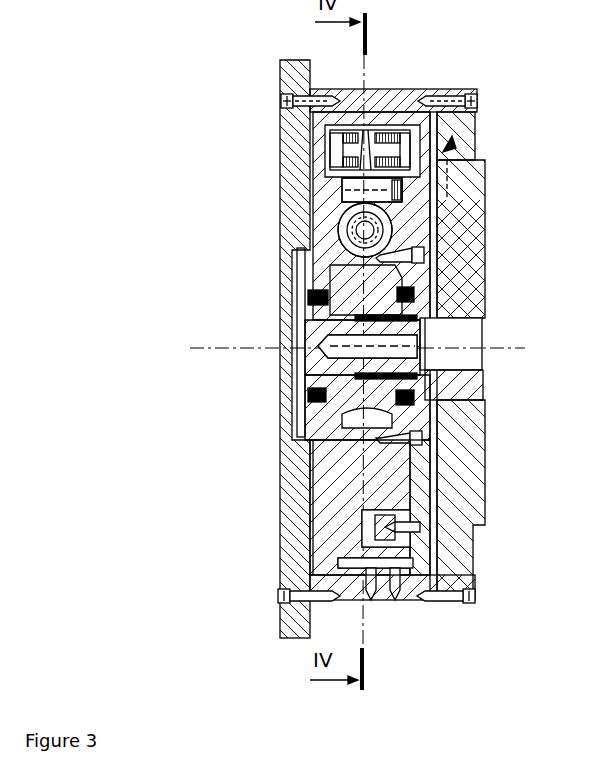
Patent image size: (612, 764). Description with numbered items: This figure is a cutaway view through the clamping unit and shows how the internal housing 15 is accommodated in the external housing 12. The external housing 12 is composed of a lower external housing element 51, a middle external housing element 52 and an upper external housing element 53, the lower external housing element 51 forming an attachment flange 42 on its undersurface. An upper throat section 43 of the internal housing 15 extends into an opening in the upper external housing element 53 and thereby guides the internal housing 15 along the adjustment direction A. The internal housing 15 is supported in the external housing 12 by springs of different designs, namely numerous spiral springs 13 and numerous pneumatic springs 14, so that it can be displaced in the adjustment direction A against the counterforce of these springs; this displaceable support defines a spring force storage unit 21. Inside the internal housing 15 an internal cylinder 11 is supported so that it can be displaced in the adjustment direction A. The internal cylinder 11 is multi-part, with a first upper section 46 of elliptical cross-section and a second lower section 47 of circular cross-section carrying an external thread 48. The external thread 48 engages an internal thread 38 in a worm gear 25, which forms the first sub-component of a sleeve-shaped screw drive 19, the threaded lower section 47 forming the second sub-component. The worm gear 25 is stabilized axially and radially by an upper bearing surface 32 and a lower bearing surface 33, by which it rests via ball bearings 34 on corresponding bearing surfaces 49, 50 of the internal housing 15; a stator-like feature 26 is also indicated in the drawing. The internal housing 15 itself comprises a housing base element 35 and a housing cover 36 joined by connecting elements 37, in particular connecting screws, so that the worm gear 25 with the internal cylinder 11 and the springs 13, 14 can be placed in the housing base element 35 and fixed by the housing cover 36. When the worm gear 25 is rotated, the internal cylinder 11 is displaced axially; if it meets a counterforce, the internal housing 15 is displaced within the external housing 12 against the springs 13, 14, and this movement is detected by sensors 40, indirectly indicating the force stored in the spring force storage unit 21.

The internal cylinder 11 is at (487, 318).
The external housing 12 is at (480, 500).
The spiral springs 13 is at (410, 112).
The pneumatic springs 14 is at (480, 162).
The internal housing 15 is at (325, 465).
The sleeve-shaped screw drive 19 is at (300, 312).
The spring force storage unit 21 is at (478, 124).
The worm gear 25 is at (340, 270).
The stator 26 is at (464, 267).
The upper bearing surface 32 is at (415, 400).
The lower bearing surface 33 is at (310, 400).
The ball bearings 34 is at (422, 438).
The housing base element 35 is at (322, 516).
The housing cover 36 is at (428, 506).
The connecting elements 37 is at (480, 218).
The internal thread 38 is at (400, 396).
The sensors 40 is at (403, 600).
The attachment flange 42 is at (280, 624).
The upper throat section 43 is at (485, 362).
The first upper section 46 is at (442, 357).
The second lower section 47 is at (300, 356).
The external thread 48 is at (430, 305).
The bearing surface 49 is at (423, 298).
The bearing surface 50 is at (310, 285).
The lower external housing element 51 is at (280, 156).
The middle external housing element 52 is at (383, 98).
The upper external housing element 53 is at (460, 568).
The adjustment direction A is at (374, 349).